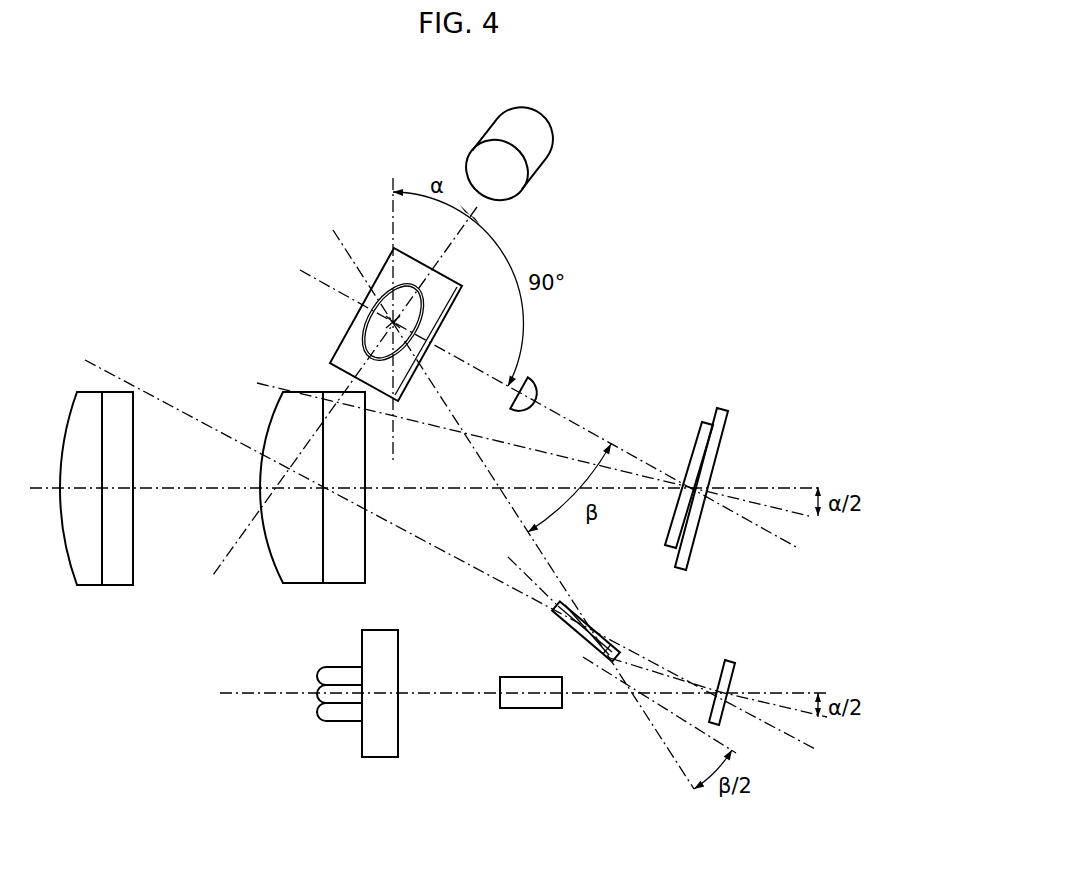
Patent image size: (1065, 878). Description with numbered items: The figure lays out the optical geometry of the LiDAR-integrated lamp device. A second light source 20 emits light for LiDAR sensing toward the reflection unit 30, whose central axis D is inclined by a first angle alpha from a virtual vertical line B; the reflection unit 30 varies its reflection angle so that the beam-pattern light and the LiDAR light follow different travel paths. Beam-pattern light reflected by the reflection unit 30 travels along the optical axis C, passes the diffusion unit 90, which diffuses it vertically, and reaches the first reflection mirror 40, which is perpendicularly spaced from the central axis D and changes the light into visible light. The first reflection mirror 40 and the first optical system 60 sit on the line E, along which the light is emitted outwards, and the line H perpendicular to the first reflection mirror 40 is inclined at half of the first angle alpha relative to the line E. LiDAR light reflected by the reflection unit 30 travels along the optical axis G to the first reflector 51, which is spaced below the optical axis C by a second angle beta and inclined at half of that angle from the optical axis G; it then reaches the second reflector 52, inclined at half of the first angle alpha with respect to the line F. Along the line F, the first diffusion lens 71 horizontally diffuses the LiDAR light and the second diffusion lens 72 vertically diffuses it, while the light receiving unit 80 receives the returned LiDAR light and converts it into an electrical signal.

The second light source 20 is at (538, 145).
The reflection unit 30 is at (350, 343).
The first reflection mirror 40 is at (720, 410).
The first reflector 51 is at (571, 627).
The second reflector 52 is at (733, 663).
The first optical system 60 is at (93, 573).
The first diffusion lens 71 is at (530, 705).
The second diffusion lens 72 is at (325, 708).
The light receiving unit 80 is at (377, 747).
The diffusion unit 90 is at (532, 380).
The virtual vertical line B is at (392, 218).
The optical axis C is at (603, 441).
The central axis D is at (452, 247).
The line E is at (172, 490).
The line F is at (252, 695).
The optical axis G is at (561, 583).
The line perpendicular to the first reflection mirror H is at (760, 508).